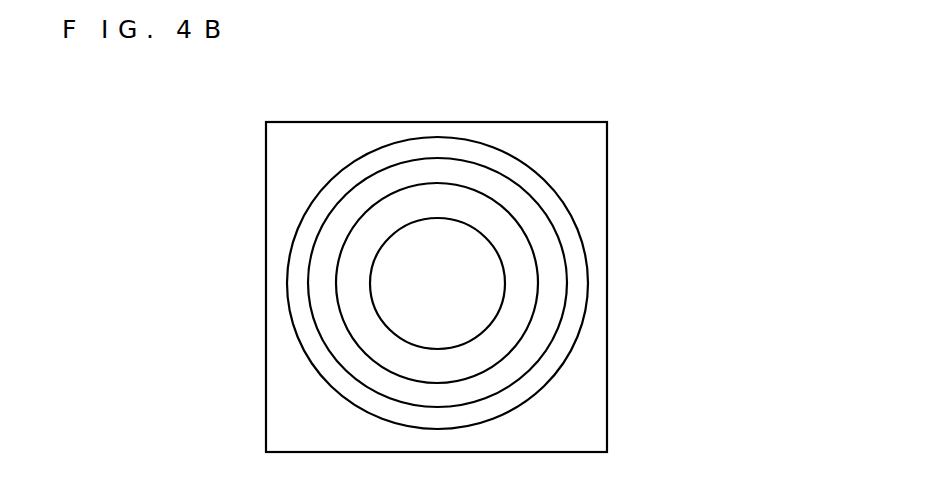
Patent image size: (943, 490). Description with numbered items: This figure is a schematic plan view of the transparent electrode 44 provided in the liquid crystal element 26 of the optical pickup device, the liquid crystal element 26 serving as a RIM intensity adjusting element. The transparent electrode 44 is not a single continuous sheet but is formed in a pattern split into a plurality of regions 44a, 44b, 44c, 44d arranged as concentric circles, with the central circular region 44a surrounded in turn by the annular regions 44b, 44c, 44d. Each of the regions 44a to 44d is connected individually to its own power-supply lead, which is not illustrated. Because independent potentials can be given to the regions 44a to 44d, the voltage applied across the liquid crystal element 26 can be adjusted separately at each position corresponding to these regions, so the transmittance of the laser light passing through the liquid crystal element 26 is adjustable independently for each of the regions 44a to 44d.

The liquid crystal element 26 is at (722, 138).
The transparent electrode 44 is at (117, 282).
The region 44a is at (413, 263).
The region 44b is at (365, 317).
The region 44c is at (351, 352).
The region 44d is at (368, 404).